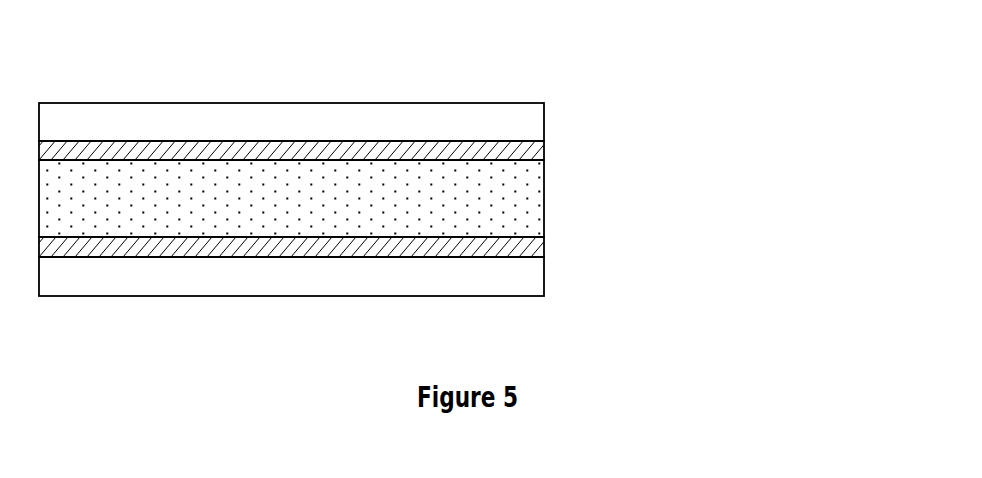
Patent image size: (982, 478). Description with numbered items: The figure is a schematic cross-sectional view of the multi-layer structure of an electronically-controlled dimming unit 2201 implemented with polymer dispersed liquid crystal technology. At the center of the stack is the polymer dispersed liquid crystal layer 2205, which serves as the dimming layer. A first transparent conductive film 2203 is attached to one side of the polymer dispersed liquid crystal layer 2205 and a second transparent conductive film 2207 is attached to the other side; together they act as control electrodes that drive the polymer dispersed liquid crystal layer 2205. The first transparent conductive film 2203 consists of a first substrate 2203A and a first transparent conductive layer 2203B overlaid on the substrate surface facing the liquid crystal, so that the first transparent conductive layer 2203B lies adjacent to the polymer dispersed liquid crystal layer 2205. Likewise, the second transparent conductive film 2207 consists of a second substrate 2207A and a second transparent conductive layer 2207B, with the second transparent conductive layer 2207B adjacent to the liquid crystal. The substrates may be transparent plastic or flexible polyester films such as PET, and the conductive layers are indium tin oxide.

The electronically-controlled dimming unit 2201 is at (398, 66).
The first transparent conductive film 2203 is at (680, 92).
The first substrate 2203A is at (544, 121).
The first transparent conductive layer 2203B is at (544, 153).
The polymer dispersed liquid crystal layer 2205 is at (544, 197).
The second transparent conductive film 2207 is at (710, 247).
The second transparent conductive layer 2207B is at (544, 248).
The second substrate 2207A is at (544, 276).